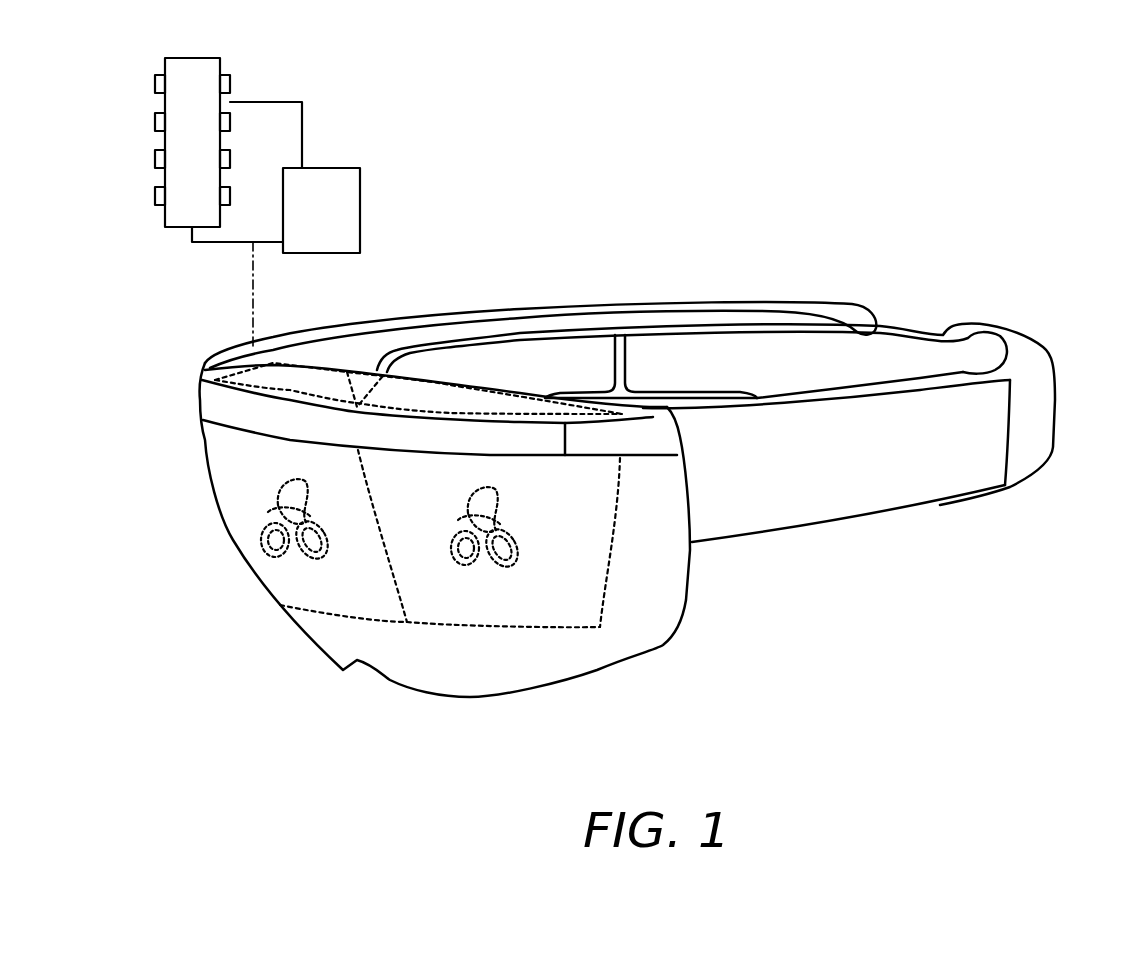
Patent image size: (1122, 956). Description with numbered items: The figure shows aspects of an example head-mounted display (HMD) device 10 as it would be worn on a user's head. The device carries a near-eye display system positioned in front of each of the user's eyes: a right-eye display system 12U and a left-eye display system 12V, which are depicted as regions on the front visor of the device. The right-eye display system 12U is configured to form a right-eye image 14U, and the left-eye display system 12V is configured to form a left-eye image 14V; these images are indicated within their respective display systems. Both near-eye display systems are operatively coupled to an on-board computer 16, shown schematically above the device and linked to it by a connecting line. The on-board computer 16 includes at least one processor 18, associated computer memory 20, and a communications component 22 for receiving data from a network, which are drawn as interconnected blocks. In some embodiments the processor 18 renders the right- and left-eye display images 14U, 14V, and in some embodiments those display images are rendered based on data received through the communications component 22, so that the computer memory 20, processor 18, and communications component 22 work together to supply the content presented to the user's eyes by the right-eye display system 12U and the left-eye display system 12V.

The head-mounted display device 10 is at (1082, 256).
The right-eye display system 12U is at (343, 536).
The left-eye display system 12V is at (513, 542).
The right-eye image 14U is at (295, 480).
The left-eye image 14V is at (495, 510).
The on-board computer 16 is at (346, 103).
The processor 18 is at (247, 226).
The computer memory 20 is at (192, 142).
The communications component 22 is at (321, 210).